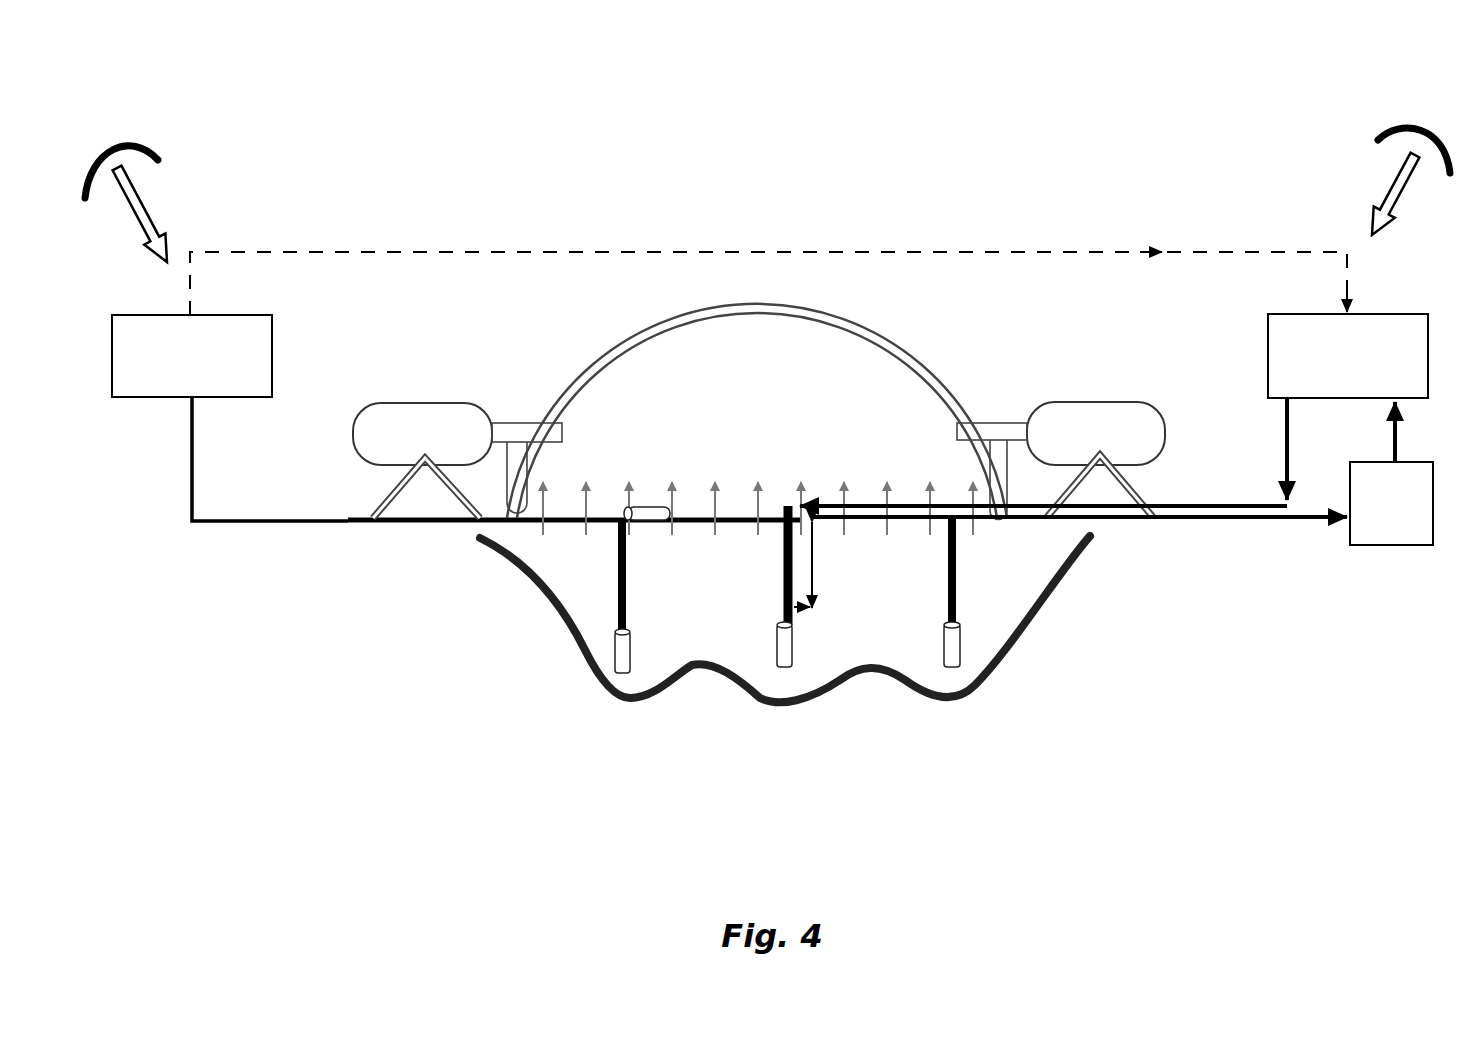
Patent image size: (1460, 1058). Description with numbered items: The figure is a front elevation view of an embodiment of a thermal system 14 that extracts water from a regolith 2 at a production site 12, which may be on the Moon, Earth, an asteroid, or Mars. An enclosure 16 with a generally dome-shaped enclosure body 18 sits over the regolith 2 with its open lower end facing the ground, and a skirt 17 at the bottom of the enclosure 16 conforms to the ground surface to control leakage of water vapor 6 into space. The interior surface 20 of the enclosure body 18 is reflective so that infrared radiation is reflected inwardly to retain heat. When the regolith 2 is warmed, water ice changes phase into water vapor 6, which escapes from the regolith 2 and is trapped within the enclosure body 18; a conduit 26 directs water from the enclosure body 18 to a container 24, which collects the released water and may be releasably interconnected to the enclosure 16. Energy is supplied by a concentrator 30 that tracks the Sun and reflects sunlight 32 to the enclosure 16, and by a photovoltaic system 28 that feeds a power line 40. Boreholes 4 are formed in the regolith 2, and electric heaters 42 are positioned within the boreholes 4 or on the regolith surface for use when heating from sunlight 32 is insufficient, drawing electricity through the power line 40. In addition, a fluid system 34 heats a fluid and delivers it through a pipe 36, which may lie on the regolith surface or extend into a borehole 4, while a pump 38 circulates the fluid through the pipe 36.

The regolith 2 is at (784, 621).
The boreholes 4 is at (617, 570).
The water vapor 6 is at (752, 500).
The production site 12 is at (767, 386).
The thermal system 14 is at (762, 375).
The enclosure 16 is at (762, 400).
The skirt 17 is at (515, 516).
The enclosure body 18 is at (927, 372).
The interior surface 20 is at (858, 338).
The container 24 is at (759, 460).
The conduit 26 is at (503, 423).
The photovoltaic system 28 is at (235, 315).
The concentrator 30 is at (128, 144).
The sunlight 32 is at (153, 217).
The fluid system 34 is at (1370, 313).
The pipe 36 is at (1282, 450).
The pump 38 is at (1357, 460).
The power line 40 is at (238, 521).
The electric heaters 42 is at (645, 505).